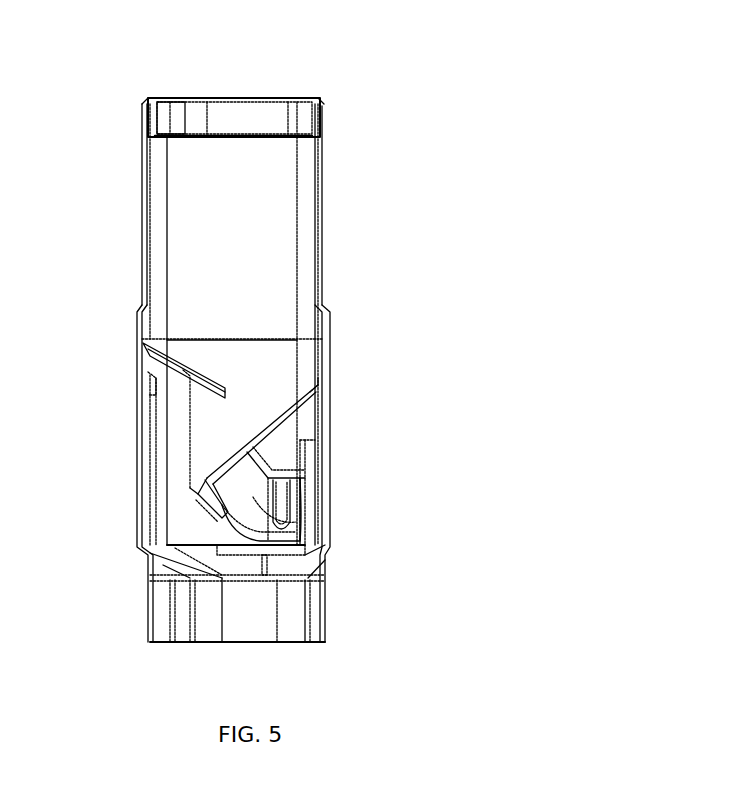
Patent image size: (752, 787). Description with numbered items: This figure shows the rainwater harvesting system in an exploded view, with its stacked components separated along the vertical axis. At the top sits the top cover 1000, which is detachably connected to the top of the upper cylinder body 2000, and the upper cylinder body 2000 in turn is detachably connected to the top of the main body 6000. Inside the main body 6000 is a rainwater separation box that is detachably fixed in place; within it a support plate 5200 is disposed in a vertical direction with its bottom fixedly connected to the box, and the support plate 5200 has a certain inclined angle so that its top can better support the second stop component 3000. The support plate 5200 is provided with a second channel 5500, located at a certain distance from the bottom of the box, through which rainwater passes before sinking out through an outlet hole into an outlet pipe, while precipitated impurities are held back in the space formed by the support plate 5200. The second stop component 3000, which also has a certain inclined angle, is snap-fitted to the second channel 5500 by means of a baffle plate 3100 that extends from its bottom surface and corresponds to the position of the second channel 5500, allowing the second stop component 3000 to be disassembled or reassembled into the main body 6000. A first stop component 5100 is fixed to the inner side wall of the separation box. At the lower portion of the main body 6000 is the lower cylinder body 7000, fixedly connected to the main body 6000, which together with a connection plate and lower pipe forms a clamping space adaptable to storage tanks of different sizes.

The top cover 1000 is at (150, 99).
The upper cylinder body 2000 is at (318, 220).
The second stop component 3000 is at (205, 476).
The baffle plate 3100 is at (258, 462).
The first stop component 5100 is at (143, 343).
The support plate 5200 is at (252, 497).
The second channel 5500 is at (285, 503).
The main body 6000 is at (320, 385).
The lower cylinder body 7000 is at (148, 598).